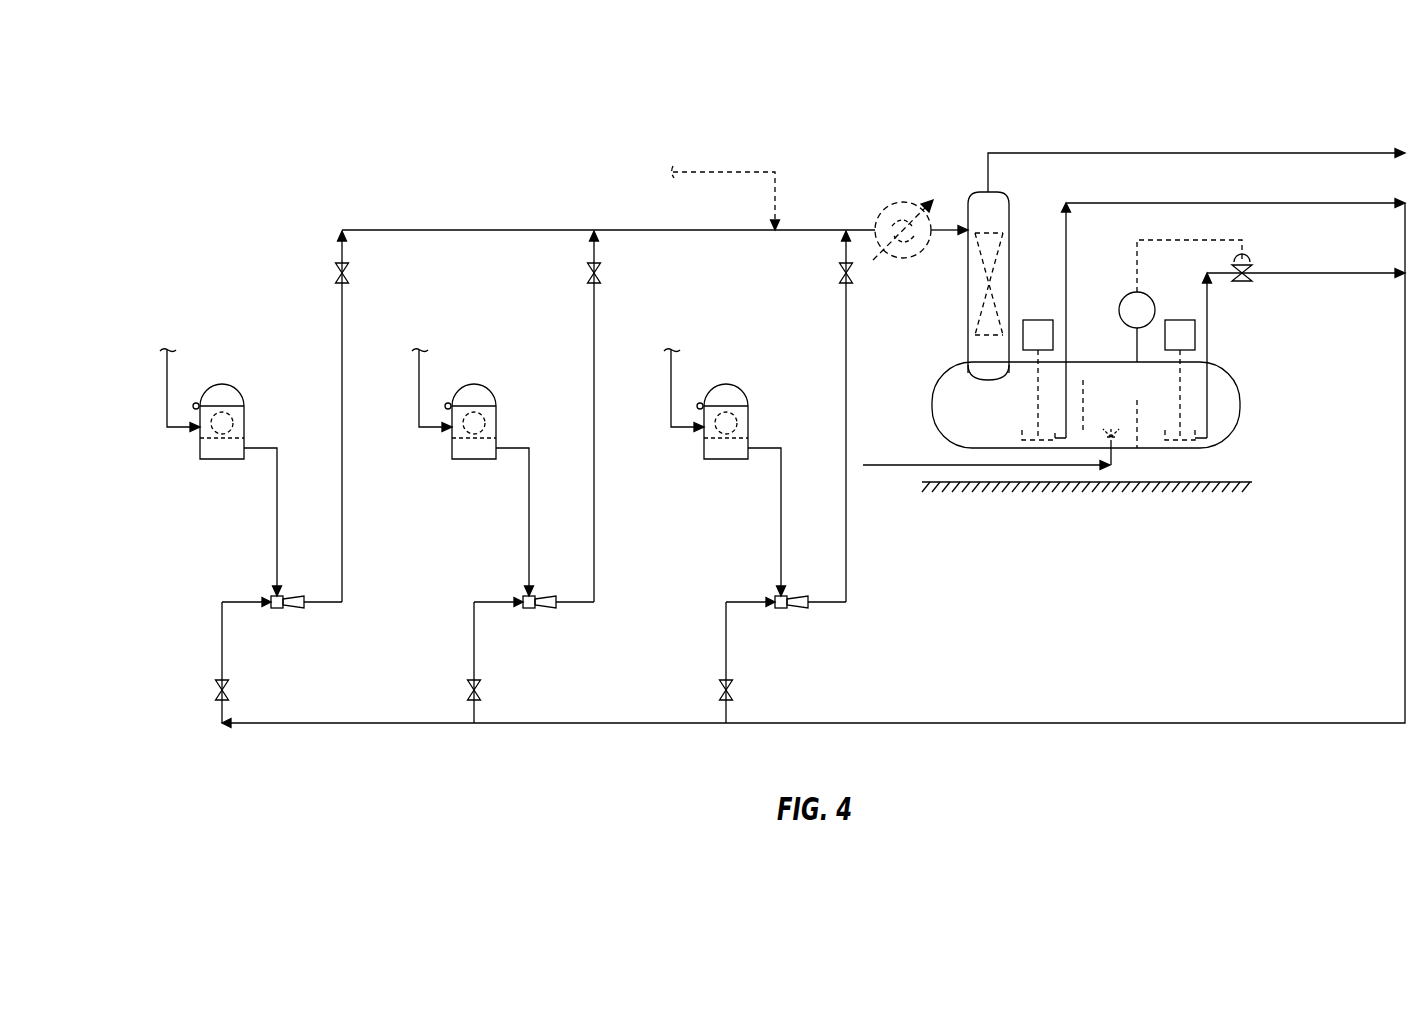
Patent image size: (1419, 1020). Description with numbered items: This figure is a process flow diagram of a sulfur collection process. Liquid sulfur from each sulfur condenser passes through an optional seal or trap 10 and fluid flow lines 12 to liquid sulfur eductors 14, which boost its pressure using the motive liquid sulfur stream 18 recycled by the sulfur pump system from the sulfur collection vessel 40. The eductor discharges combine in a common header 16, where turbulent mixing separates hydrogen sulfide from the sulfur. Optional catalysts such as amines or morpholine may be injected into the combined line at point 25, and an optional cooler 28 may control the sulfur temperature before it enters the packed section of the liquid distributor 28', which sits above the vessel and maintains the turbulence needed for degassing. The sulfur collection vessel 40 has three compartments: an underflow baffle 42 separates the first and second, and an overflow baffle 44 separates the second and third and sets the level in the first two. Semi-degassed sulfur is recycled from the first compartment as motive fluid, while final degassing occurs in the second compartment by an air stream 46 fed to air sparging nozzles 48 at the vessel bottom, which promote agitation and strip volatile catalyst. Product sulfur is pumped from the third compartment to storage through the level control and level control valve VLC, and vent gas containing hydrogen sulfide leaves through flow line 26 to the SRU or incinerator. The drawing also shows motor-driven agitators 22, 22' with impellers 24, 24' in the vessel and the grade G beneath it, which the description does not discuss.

The seal or trap 10 is at (220, 461).
The fluid flow lines 12 is at (275, 523).
The liquid sulfur eductors 14 is at (280, 609).
The common header 16 is at (428, 230).
The motive liquid sulfur stream 18 is at (1120, 723).
The agitator 22 is at (1015, 380).
The agitator 22' is at (1232, 380).
The impeller 24 is at (1014, 427).
The impeller 24' is at (1208, 455).
The catalyst injection point 25 is at (710, 172).
The vent gas flow line 26 is at (1115, 153).
The cooler 28 is at (905, 217).
The liquid distributor 28' is at (1024, 273).
The sulfur collection vessel 40 is at (1228, 420).
The underflow baffle 42 is at (1083, 428).
The overflow baffle 44 is at (1137, 430).
The air stream 46 is at (920, 464).
The air sparging nozzles 48 is at (1113, 452).
The grade G is at (995, 492).
The level control valve VLC is at (1245, 280).